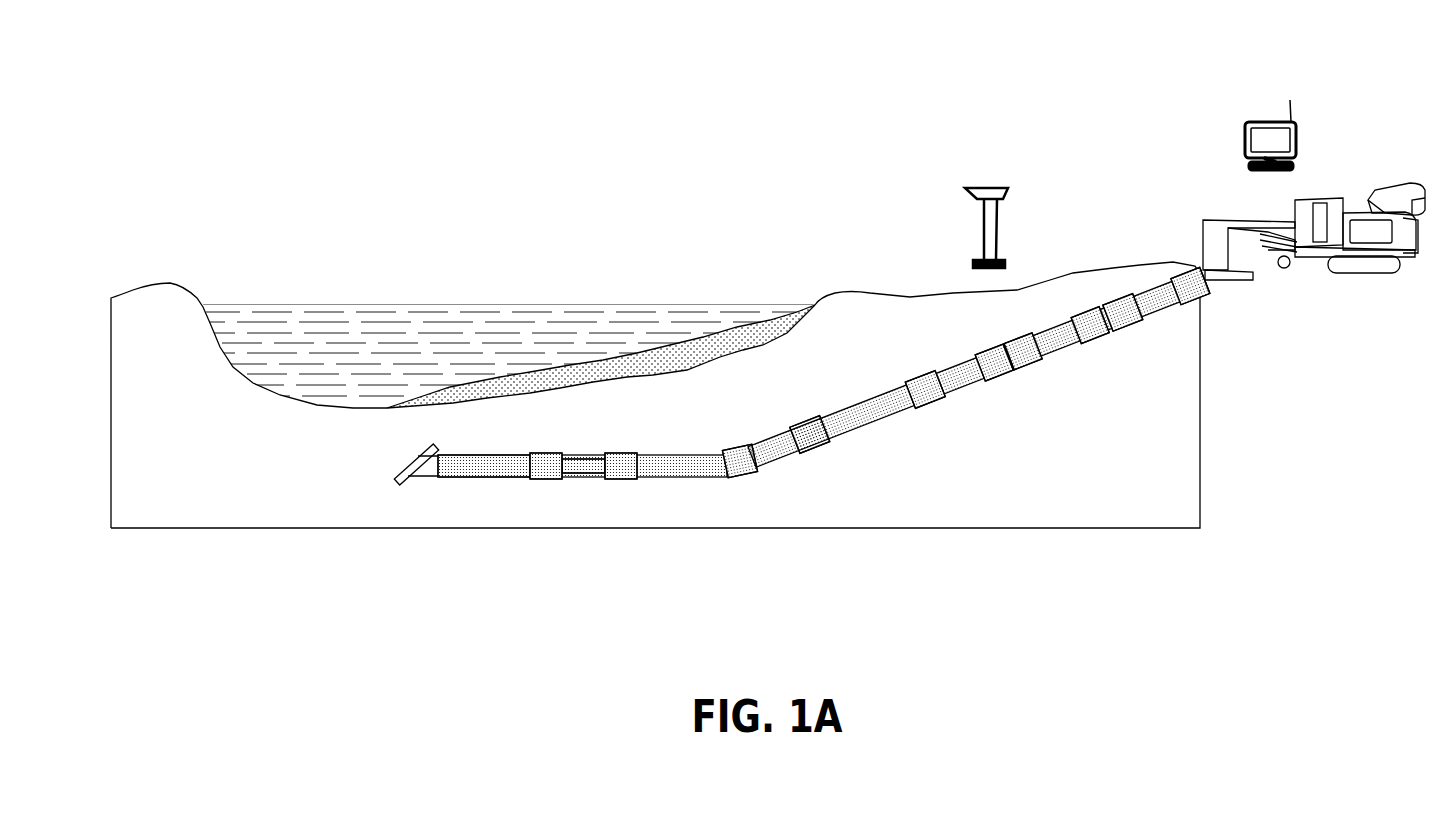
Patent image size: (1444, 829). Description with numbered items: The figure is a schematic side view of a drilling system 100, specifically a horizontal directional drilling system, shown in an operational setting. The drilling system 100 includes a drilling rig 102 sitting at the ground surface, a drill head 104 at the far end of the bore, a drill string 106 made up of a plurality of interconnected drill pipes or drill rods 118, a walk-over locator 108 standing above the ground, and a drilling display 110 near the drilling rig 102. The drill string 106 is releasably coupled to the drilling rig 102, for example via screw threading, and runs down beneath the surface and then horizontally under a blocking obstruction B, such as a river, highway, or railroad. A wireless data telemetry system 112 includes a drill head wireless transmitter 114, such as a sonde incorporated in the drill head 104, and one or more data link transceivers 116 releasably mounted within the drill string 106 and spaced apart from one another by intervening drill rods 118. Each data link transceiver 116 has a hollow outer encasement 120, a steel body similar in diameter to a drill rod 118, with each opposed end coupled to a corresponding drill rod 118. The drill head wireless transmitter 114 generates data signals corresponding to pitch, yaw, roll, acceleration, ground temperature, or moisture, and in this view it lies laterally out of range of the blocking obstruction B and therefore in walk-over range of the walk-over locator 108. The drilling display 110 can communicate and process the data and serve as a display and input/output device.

The drilling system 100 is at (843, 95).
The drilling rig 102 is at (1401, 182).
The drill head 104 is at (431, 503).
The drill string 106 is at (681, 558).
The walk-over locator 108 is at (994, 186).
The drilling display 110 is at (1262, 120).
The wireless data telemetry system 112 is at (824, 406).
The drill head wireless transmitter 114 is at (505, 477).
The data link transceiver 116 is at (654, 477).
The drill pipe or drill rod 118 is at (775, 458).
The hollow outer encasement 120 is at (709, 477).
The blocking obstruction B is at (302, 255).